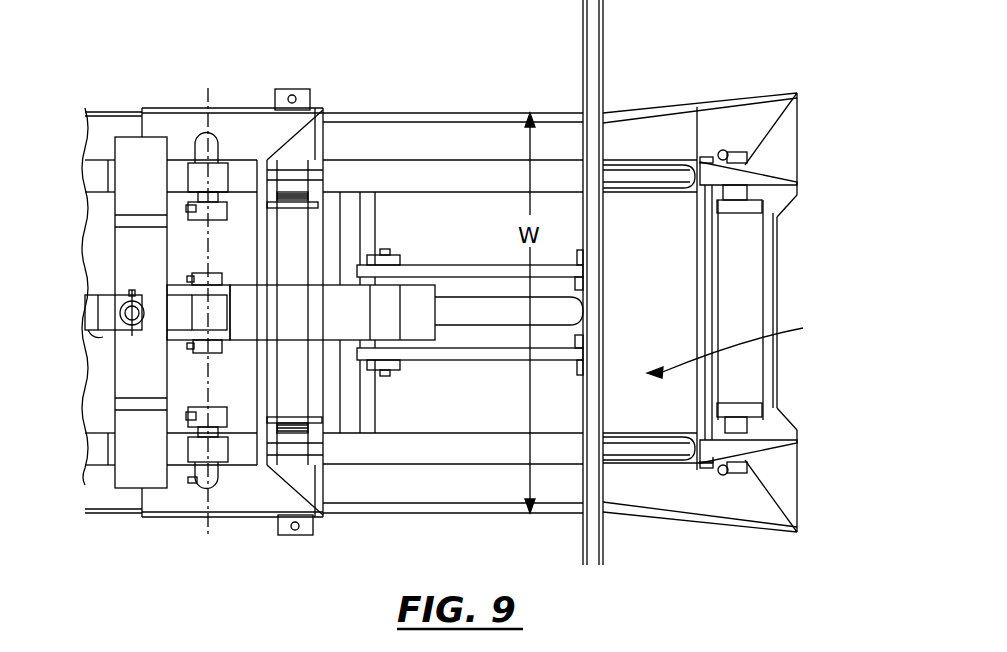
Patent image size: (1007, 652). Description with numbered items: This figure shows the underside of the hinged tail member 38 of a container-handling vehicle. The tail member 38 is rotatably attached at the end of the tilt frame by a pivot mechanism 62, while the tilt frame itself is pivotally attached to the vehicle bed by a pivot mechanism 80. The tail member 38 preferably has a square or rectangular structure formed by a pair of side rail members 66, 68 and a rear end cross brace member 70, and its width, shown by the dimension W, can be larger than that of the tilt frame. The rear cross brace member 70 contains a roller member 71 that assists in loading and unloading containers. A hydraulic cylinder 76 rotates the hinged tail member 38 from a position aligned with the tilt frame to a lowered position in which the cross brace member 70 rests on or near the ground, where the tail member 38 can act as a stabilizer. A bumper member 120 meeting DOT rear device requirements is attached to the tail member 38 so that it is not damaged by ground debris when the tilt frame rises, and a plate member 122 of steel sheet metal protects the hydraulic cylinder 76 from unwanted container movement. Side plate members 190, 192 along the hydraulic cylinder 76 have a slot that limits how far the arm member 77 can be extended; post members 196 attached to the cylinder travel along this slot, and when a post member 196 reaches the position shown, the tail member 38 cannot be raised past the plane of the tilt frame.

The hinged tail member 38 is at (387, 111).
The pivot mechanism 62 is at (293, 89).
The side rail member 66 is at (505, 111).
The side rail member 68 is at (397, 511).
The rear end cross brace member 70 is at (737, 120).
The roller member 71 is at (745, 268).
The hydraulic cylinder 76 is at (313, 300).
The arm member 77 is at (470, 313).
The pivot mechanism 80 is at (224, 108).
The bumper member 120 is at (603, 22).
The plate member 122 is at (746, 346).
The side plate member 190 is at (503, 353).
The side plate member 192 is at (490, 272).
The post member 196 is at (385, 256).